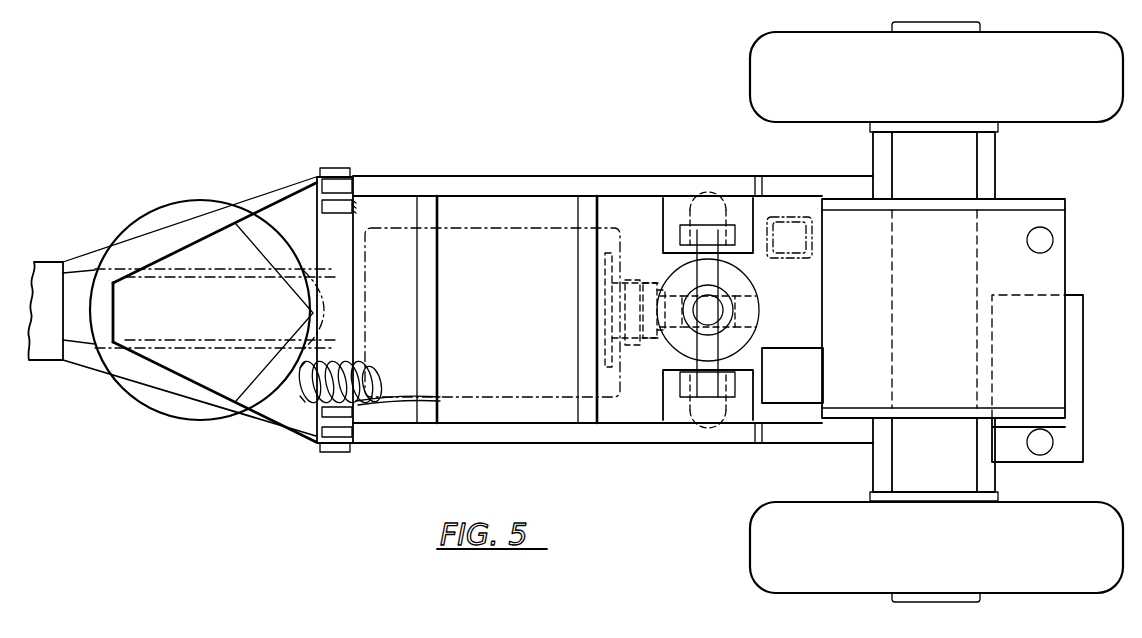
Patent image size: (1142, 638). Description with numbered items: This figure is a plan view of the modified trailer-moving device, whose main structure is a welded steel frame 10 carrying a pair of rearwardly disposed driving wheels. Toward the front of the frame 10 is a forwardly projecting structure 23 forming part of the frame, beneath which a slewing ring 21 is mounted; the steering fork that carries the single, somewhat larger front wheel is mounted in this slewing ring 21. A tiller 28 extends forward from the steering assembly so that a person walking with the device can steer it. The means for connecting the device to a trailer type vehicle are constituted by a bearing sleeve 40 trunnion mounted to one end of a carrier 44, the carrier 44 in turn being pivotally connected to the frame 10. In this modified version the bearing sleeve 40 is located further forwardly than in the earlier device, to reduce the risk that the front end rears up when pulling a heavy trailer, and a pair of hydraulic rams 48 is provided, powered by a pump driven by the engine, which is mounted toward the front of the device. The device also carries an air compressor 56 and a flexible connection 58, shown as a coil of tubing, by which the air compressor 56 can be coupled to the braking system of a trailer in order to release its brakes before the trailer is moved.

The frame 10 is at (812, 428).
The slewing ring 21 is at (171, 207).
The forwardly projecting structure 23 is at (270, 205).
The tiller 28 is at (48, 268).
The bearing sleeve 40 is at (740, 287).
The carrier 44 is at (510, 433).
The hydraulic rams 48 is at (722, 198).
The air compressor 56 is at (792, 360).
The flexible connection 58 is at (311, 400).